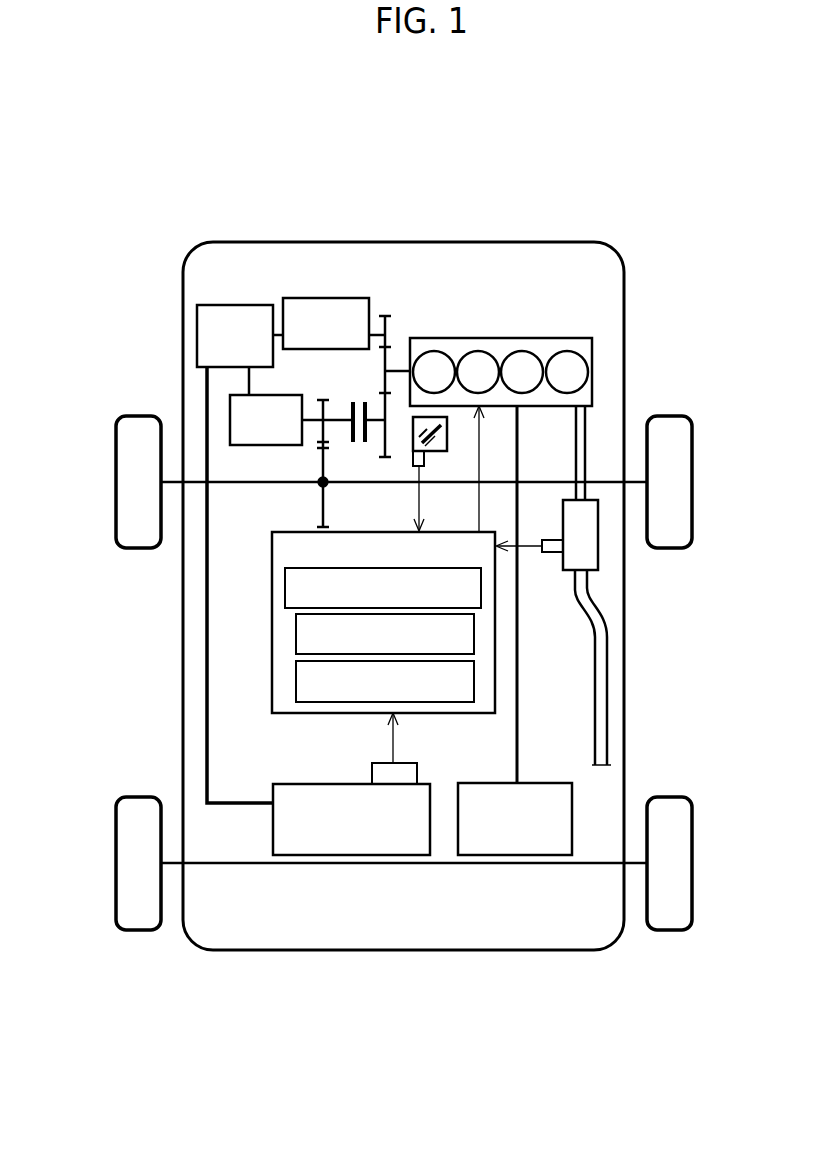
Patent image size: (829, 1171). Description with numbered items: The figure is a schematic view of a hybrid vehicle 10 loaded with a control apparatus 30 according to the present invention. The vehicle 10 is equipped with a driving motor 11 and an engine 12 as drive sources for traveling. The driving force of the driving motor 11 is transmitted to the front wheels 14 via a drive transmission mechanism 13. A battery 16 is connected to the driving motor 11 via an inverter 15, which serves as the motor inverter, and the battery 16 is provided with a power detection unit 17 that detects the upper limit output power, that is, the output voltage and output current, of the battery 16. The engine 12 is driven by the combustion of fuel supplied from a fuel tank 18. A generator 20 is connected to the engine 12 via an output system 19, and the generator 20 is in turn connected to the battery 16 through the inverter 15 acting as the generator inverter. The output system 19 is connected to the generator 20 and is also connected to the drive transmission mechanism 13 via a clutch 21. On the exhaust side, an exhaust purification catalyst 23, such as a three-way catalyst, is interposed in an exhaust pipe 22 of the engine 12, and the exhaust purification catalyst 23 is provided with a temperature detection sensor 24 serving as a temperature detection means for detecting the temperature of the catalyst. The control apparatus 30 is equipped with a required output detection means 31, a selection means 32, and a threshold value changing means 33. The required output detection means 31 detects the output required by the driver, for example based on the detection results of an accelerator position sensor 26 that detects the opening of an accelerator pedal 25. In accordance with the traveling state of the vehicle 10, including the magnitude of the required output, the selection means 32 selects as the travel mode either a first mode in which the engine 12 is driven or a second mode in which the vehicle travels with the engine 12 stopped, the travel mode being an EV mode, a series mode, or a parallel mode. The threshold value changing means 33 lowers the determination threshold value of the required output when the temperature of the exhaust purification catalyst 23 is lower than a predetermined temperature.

The hybrid vehicle 10 is at (609, 127).
The driving motor 11 is at (230, 416).
The engine 12 is at (593, 352).
The drive transmission mechanism 13 is at (323, 462).
The front wheels 14 is at (693, 453).
The inverter 15 is at (197, 318).
The battery 16 is at (352, 855).
The power detection unit 17 is at (372, 770).
The fuel tank 18 is at (572, 803).
The output system 19 is at (388, 360).
The generator 20 is at (303, 298).
The clutch 21 is at (372, 386).
The exhaust pipe 22 is at (585, 420).
The exhaust purification catalyst 23 is at (598, 562).
The temperature detection sensor 24 is at (552, 553).
The accelerator pedal 25 is at (413, 435).
The accelerator position sensor 26 is at (424, 462).
The control apparatus 30 is at (355, 605).
The required output detection means 31 is at (285, 585).
The selection means 32 is at (296, 632).
The threshold value changing means 33 is at (296, 681).